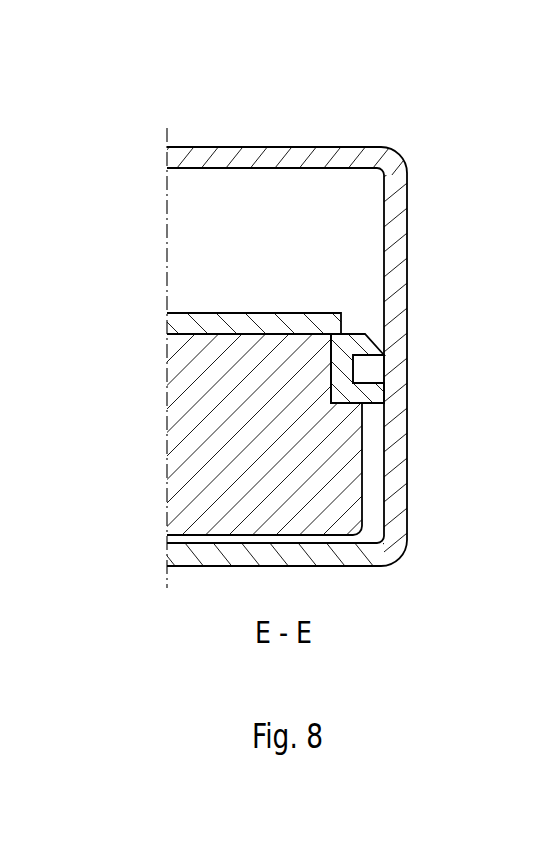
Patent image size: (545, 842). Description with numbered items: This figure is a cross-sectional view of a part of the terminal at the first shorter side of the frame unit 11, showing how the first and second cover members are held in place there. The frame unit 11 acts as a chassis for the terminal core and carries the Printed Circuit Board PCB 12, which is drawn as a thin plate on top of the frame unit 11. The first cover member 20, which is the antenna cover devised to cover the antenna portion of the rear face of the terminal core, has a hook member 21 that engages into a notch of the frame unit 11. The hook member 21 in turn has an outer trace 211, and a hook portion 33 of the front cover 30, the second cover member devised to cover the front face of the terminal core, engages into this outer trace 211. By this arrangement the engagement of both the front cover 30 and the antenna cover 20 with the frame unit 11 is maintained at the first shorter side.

The frame unit 11 is at (192, 460).
The Printed Circuit Board PCB 12 is at (192, 312).
The first cover member 20 is at (311, 321).
The hook member 21 is at (347, 356).
The outer trace 211 is at (368, 370).
The second cover member 30 is at (292, 157).
The hook portion 33 is at (403, 323).